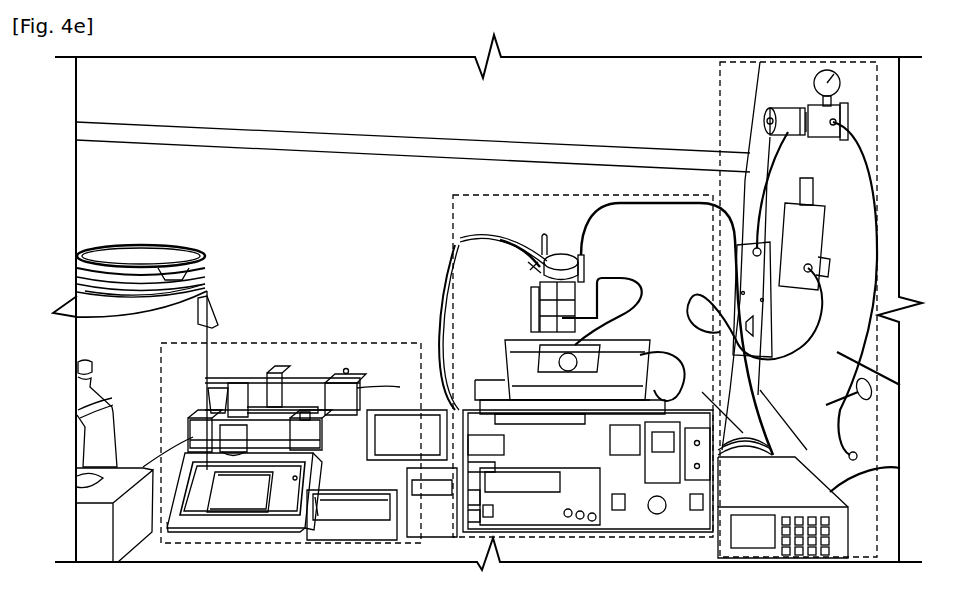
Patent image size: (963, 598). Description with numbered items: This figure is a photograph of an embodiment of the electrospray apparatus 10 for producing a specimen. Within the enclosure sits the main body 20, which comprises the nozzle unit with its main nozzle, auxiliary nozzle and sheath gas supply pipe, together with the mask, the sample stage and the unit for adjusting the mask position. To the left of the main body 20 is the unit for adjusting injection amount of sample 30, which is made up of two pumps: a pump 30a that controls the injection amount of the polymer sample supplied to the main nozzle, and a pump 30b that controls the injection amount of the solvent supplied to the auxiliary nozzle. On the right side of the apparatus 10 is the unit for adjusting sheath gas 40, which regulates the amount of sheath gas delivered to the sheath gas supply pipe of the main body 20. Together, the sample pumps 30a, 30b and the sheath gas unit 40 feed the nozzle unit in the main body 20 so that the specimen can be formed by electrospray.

The electrospray apparatus 10 is at (140, 97).
The main body 20 is at (581, 195).
The unit for adjusting injection amount of sample 30 is at (309, 406).
The pump 30a is at (243, 392).
The pump 30b is at (310, 394).
The unit for adjusting sheath gas 40 is at (720, 112).